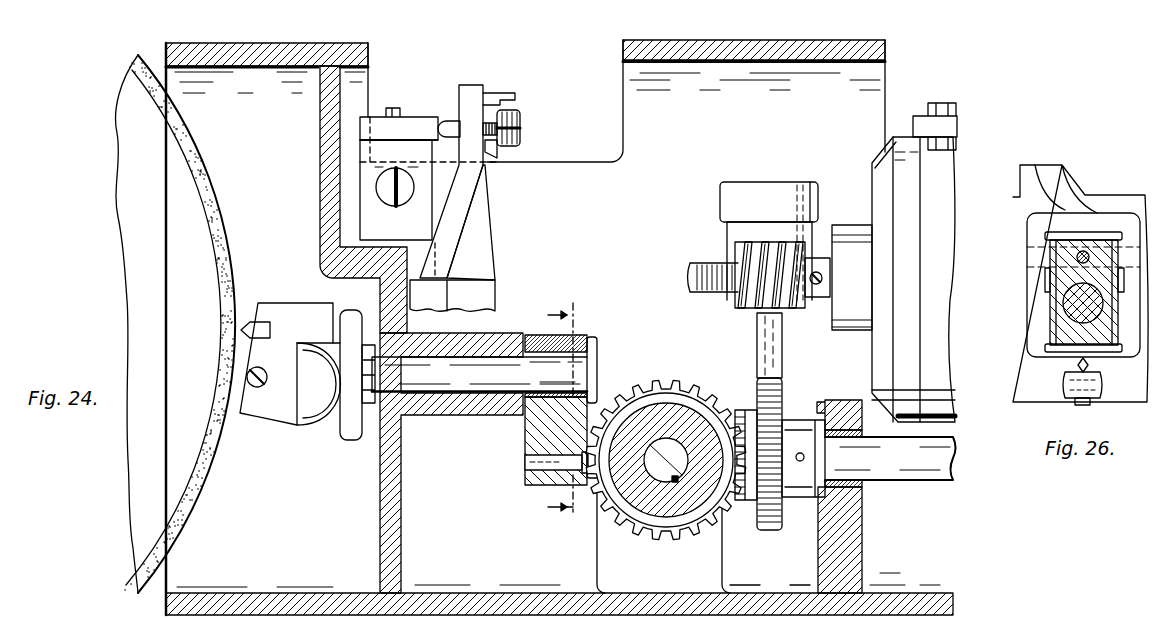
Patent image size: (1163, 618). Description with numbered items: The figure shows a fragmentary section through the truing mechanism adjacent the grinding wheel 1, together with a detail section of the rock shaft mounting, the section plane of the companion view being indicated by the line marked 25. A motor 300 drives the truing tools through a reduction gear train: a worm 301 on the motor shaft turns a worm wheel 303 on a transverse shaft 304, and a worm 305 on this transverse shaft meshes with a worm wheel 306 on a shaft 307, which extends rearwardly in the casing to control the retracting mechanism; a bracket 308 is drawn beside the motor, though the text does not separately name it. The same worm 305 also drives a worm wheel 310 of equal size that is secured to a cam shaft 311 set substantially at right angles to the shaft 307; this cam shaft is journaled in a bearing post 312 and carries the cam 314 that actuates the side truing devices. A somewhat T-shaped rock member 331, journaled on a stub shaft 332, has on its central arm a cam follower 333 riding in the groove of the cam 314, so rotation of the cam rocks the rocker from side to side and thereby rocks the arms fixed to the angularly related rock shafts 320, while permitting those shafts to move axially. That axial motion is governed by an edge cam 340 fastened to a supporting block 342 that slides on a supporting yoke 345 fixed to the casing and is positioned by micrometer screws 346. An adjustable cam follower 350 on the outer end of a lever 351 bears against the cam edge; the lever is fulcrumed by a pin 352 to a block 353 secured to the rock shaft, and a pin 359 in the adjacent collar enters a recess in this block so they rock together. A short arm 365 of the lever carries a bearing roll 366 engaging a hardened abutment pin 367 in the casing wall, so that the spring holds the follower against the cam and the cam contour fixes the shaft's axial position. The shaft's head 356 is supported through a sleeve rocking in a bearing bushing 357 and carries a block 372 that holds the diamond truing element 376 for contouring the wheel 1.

In FIG. 24, the grinding wheel 1 is at (138, 266).
In FIG. 24, the section line 25- 25 is at (543, 414).
In FIG. 24, the motor 300 is at (948, 173).
In FIG. 24, the worm 301 is at (747, 263).
In FIG. 24, the worm wheel 303 is at (690, 283).
In FIG. 24, the transverse shaft 304 is at (763, 328).
In FIG. 24, the worm 305 is at (748, 380).
In FIG. 24, the worm wheel 306 is at (782, 393).
In FIG. 24, the shaft 307 is at (918, 460).
In FIG. 24, the bearing bracket 308 is at (831, 228).
In FIG. 24, the worm wheel 310 is at (675, 383).
In FIG. 24, the cam shaft 311 is at (655, 440).
In FIG. 24, the bearing post 312 is at (705, 565).
In FIG. 24, the cam 314 is at (647, 518).
In FIG. 26, the rock shaft 320 is at (1070, 307).
In FIG. 24, the rock member 331 is at (525, 440).
In FIG. 24, the stub shaft 332 is at (453, 375).
In FIG. 24, the cam follower 333 is at (593, 480).
In FIG. 24, the edge cam 340 is at (405, 118).
In FIG. 24, the supporting block 342 is at (363, 166).
In FIG. 24, the supporting yoke 345 is at (362, 208).
In FIG. 24, the micrometer screw 346 is at (394, 203).
In FIG. 24, the cam follower 350 is at (450, 122).
In FIG. 24, the lever 351 is at (480, 243).
In FIG. 26, the lever 351 is at (1045, 226).
In FIG. 26, the pin 352 is at (1027, 259).
In FIG. 26, the block 353 is at (1065, 278).
In FIG. 24, the head 356 is at (307, 412).
In FIG. 24, the bearing bushing 357 is at (343, 425).
In FIG. 26, the pin 359 is at (1085, 255).
In FIG. 26, the short arm 365 is at (1065, 357).
In FIG. 26, the bearing roll 366 is at (1073, 384).
In FIG. 26, the abutment pin 367 is at (1080, 401).
In FIG. 24, the block 372 is at (260, 410).
In FIG. 24, the diamond truing element 376 is at (257, 305).